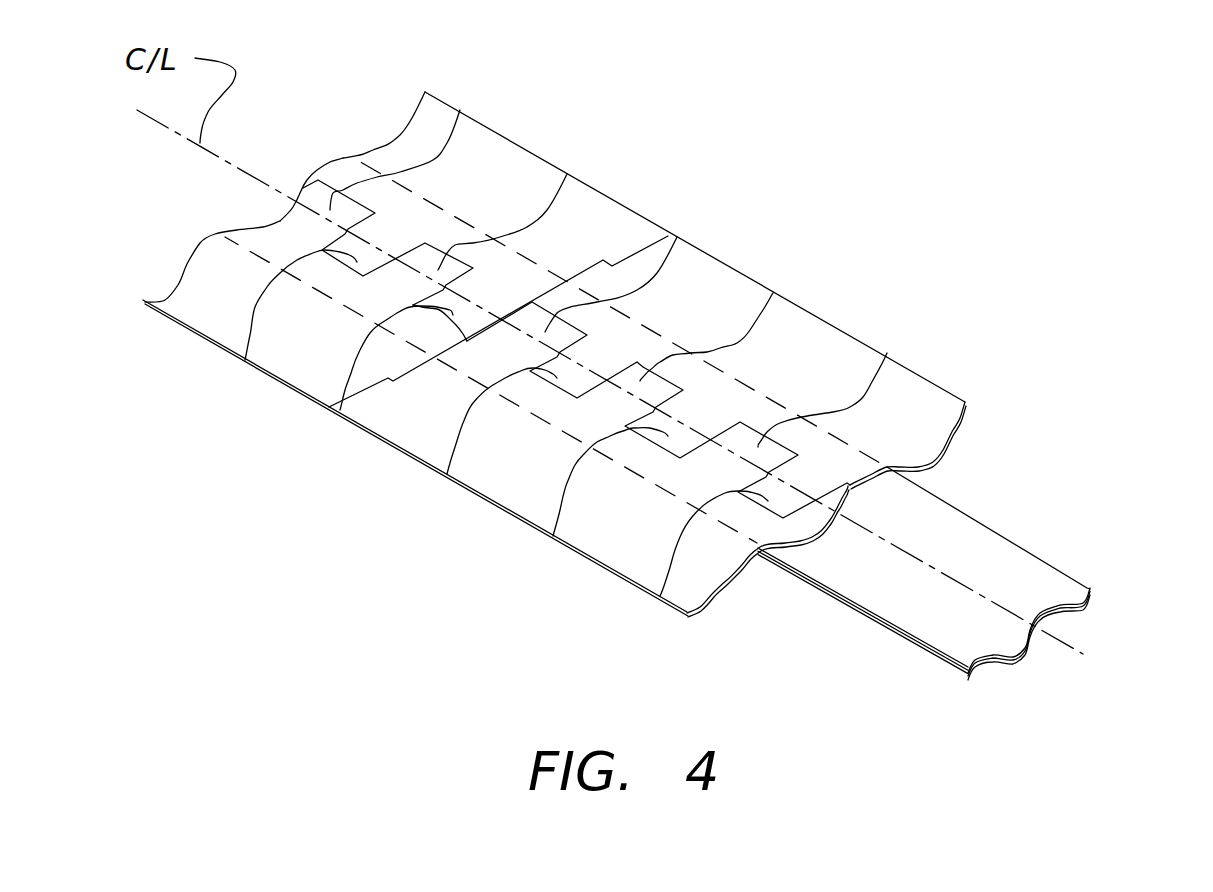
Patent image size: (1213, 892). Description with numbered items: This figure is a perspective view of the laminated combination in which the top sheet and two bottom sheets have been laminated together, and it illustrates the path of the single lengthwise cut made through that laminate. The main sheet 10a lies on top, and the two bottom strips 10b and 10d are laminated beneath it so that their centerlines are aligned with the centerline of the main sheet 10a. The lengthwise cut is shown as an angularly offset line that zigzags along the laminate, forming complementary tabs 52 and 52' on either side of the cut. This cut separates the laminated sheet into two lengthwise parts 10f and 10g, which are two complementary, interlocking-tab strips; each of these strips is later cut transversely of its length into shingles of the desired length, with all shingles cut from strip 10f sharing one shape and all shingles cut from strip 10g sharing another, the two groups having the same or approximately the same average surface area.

The main sheet 10a is at (900, 400).
The strip 10b is at (983, 547).
The strip 10d is at (880, 629).
The lengthwise part 10f is at (393, 140).
The lengthwise part 10g is at (218, 232).
The tab 52 is at (434, 458).
The tab 52' is at (672, 251).